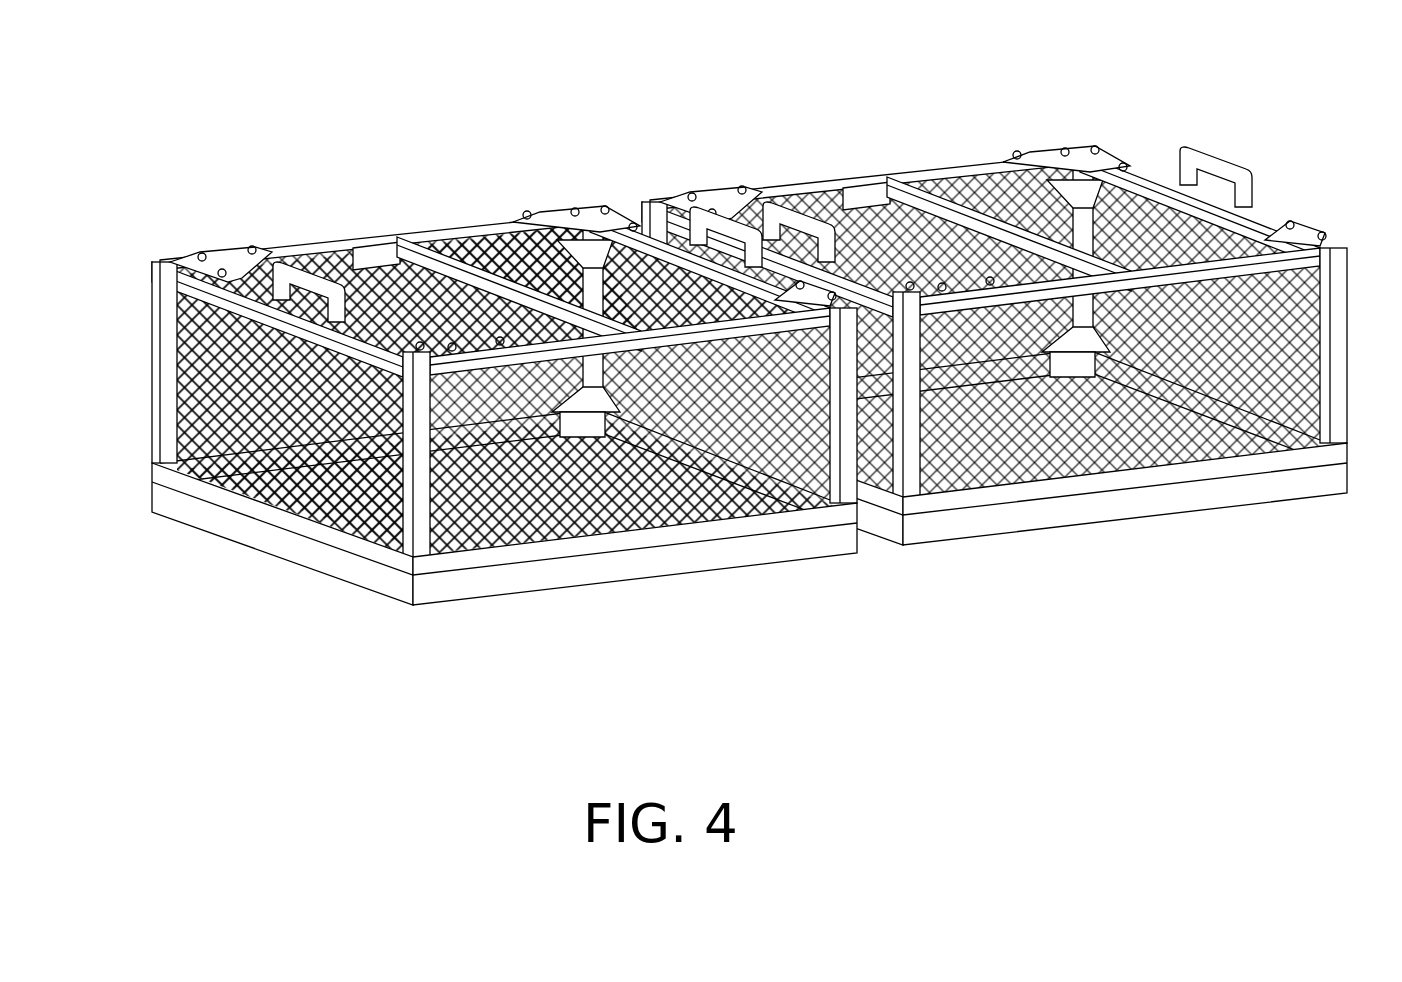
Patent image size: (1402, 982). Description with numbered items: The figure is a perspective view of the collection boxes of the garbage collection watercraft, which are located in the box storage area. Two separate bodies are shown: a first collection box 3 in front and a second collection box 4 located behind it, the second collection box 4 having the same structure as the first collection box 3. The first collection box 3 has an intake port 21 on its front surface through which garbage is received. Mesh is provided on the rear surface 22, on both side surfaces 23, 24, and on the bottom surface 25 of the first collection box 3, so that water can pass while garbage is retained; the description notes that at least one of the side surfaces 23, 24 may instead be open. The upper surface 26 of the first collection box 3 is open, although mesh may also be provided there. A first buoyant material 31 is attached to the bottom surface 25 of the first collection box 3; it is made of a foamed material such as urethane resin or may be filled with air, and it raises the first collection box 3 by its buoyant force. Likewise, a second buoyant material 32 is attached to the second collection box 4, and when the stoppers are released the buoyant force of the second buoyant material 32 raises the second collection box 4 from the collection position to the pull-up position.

The first collection box 3 is at (456, 385).
The second collection box 4 is at (994, 324).
The intake port 21 is at (203, 413).
The rear surface 22 is at (650, 283).
The side surface 23 is at (598, 483).
The side surface 24 is at (247, 352).
The bottom surface 25 is at (370, 495).
The upper surface 26 is at (537, 257).
The first buoyant material 31 is at (510, 582).
The second buoyant material 32 is at (994, 514).